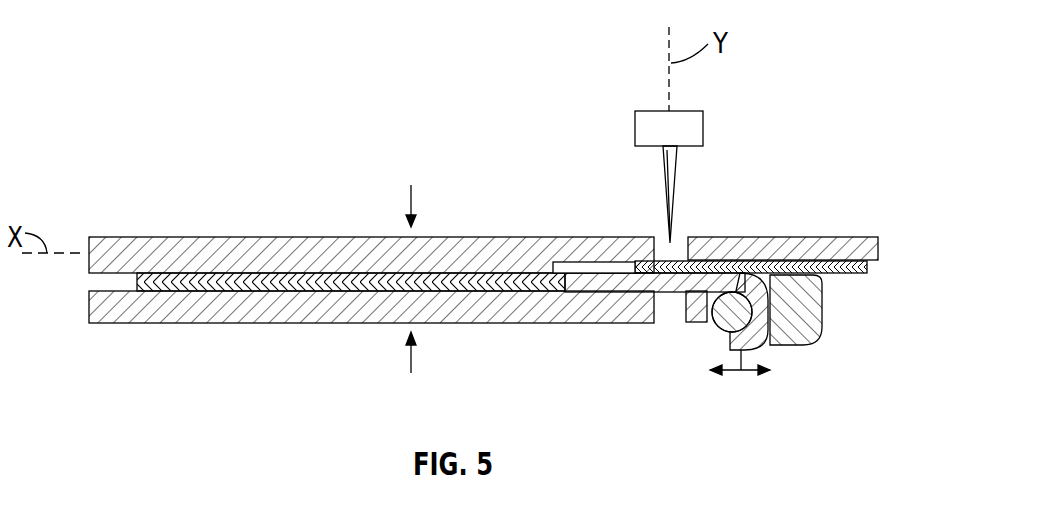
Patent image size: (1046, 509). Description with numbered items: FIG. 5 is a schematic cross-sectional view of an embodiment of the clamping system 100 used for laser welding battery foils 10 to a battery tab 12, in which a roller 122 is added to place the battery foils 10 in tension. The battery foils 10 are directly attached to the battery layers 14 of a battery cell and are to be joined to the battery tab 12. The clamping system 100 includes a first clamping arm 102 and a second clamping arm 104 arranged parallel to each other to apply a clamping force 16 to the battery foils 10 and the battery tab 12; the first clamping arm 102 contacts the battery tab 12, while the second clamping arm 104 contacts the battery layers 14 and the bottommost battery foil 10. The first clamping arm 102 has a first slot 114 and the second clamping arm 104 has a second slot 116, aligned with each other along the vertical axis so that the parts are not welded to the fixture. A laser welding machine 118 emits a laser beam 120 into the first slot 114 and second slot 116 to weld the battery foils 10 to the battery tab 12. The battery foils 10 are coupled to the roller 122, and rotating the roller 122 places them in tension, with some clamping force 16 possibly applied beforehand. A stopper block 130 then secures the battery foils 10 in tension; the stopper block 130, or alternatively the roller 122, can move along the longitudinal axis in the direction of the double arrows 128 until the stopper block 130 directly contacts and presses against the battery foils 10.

The battery foils 10 is at (650, 268).
The battery tab 12 is at (870, 272).
The battery layers 14 is at (482, 283).
The clamping force 16 is at (410, 203).
The clamping system 100 is at (551, 185).
The first clamping arm 102 is at (143, 237).
The second clamping arm 104 is at (143, 323).
The first slot 114 is at (687, 250).
The second slot 116 is at (685, 312).
The laser welding machine 118 is at (669, 111).
The laser beam 120 is at (675, 180).
The roller 122 is at (728, 329).
The double arrows 128 is at (750, 372).
The stopper block 130 is at (815, 342).